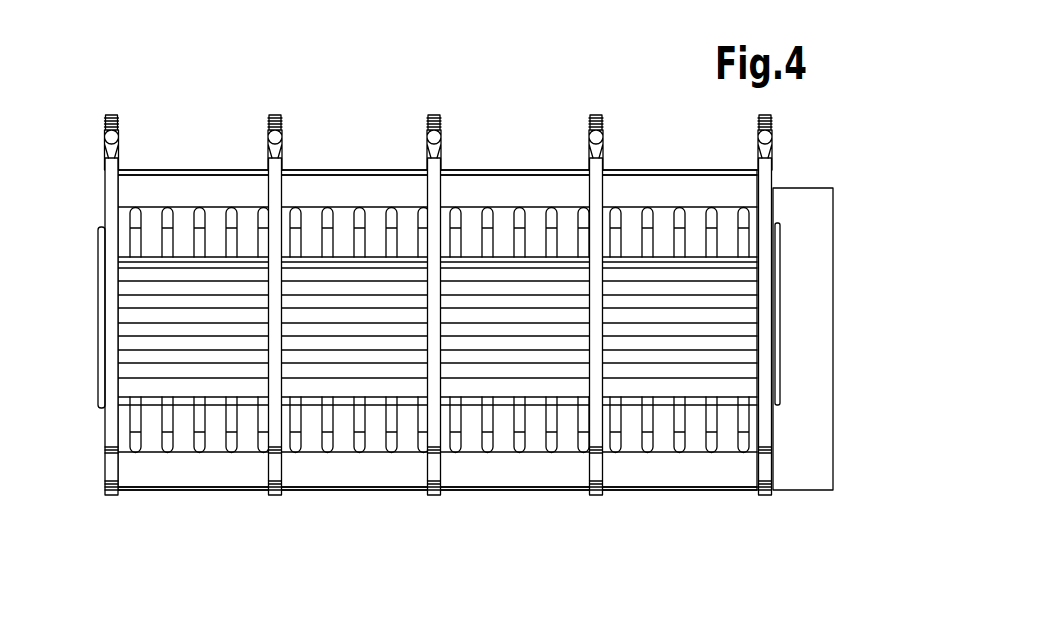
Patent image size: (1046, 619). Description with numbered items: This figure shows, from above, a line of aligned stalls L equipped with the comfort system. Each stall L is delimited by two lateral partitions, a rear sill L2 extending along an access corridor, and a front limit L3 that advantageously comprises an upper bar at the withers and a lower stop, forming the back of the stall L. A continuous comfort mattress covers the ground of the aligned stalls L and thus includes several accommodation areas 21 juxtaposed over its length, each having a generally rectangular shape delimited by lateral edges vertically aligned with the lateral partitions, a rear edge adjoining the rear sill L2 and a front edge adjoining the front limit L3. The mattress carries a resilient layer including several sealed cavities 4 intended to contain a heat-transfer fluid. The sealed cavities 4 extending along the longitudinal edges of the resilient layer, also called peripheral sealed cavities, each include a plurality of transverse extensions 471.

The stall L is at (463, 303).
The front limit L3 is at (437, 114).
The rear sill L2 is at (437, 535).
The accommodation area 21 is at (215, 372).
The sealed cavity 4 is at (451, 336).
The transverse extension 471 is at (738, 442).